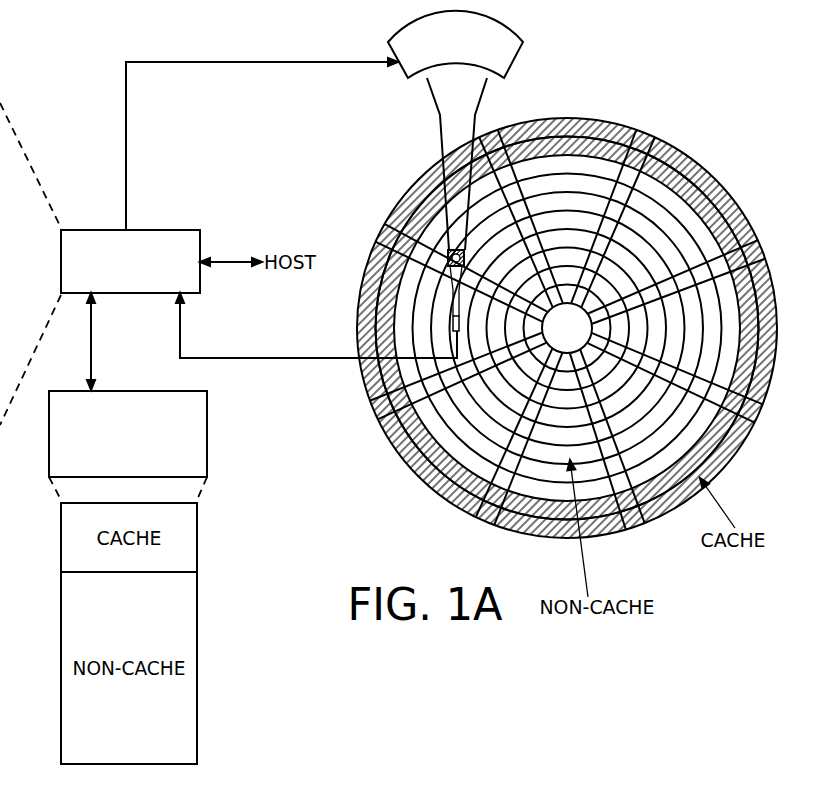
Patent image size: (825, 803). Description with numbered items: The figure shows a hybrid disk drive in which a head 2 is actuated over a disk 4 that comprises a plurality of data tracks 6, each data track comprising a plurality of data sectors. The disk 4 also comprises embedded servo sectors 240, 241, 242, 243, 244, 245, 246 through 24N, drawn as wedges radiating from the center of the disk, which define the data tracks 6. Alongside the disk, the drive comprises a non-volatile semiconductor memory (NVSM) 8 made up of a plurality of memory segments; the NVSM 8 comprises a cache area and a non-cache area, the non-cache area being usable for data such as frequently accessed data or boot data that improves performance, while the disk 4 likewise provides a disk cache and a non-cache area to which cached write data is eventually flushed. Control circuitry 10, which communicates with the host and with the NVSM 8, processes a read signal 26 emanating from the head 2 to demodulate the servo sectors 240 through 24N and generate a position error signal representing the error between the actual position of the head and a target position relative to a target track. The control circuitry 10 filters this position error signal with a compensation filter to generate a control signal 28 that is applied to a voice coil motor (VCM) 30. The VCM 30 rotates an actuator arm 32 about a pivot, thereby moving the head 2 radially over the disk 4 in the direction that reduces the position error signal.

The head 2 is at (448, 334).
The disk 4 is at (710, 165).
The data tracks 6 is at (565, 148).
The non-volatile semiconductor memory 8 is at (207, 433).
The control circuitry 10 is at (166, 230).
The servo sector 240 is at (647, 135).
The servo sector 241 is at (761, 246).
The servo sector 242 is at (755, 412).
The servo sector 243 is at (636, 528).
The servo sector 244 is at (482, 524).
The servo sector 245 is at (373, 414).
The servo sector 246 is at (377, 231).
The servo sector 24N is at (488, 135).
The read signal 26 is at (257, 357).
The control signal 28 is at (126, 134).
The voice coil motor 30 is at (407, 78).
The actuator arm 32 is at (440, 147).